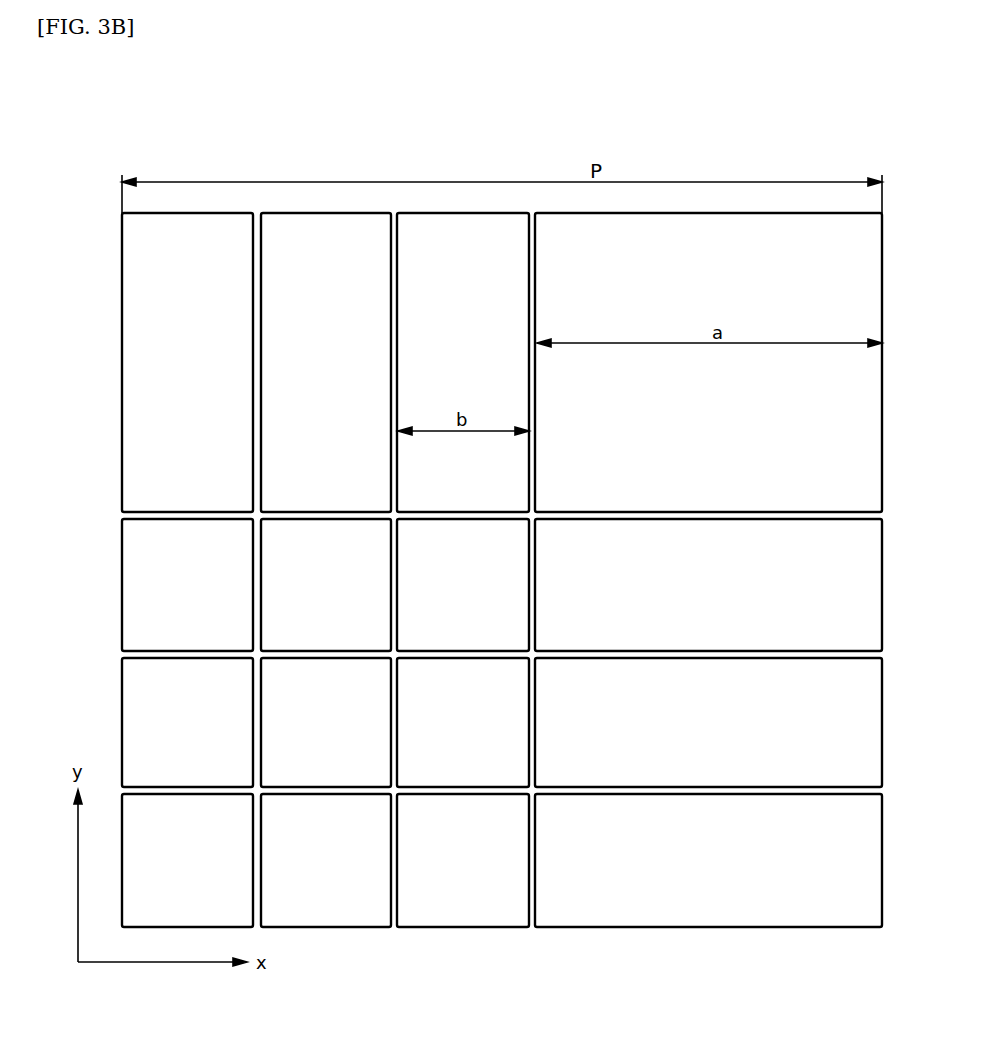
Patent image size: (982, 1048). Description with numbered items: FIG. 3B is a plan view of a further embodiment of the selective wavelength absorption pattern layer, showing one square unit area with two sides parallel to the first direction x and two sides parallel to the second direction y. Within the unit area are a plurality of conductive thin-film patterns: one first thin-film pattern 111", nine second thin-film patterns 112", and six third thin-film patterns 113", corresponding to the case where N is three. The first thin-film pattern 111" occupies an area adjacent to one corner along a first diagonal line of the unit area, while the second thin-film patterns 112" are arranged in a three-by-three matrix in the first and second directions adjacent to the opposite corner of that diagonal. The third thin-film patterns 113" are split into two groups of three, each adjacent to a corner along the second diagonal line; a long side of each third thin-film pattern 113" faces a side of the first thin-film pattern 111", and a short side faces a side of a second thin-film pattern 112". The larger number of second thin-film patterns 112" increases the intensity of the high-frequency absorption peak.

The first thin-film pattern 111 is at (709, 237).
The second thin-film pattern 112 is at (455, 905).
The third thin-film pattern 113 is at (333, 240).